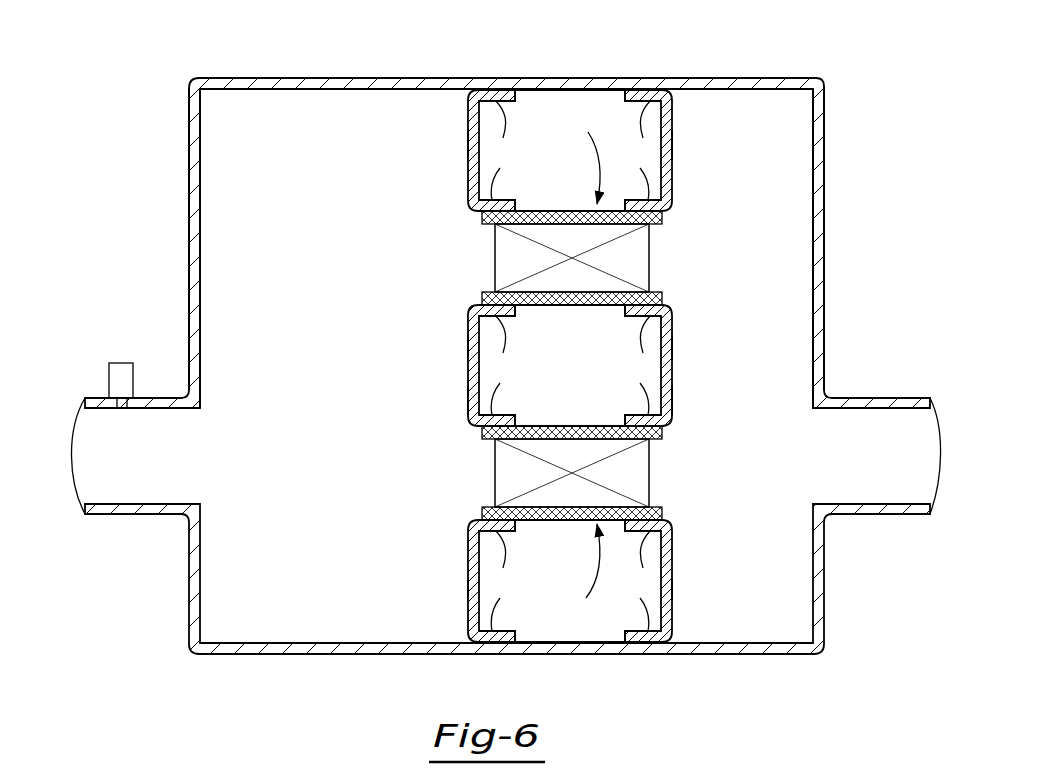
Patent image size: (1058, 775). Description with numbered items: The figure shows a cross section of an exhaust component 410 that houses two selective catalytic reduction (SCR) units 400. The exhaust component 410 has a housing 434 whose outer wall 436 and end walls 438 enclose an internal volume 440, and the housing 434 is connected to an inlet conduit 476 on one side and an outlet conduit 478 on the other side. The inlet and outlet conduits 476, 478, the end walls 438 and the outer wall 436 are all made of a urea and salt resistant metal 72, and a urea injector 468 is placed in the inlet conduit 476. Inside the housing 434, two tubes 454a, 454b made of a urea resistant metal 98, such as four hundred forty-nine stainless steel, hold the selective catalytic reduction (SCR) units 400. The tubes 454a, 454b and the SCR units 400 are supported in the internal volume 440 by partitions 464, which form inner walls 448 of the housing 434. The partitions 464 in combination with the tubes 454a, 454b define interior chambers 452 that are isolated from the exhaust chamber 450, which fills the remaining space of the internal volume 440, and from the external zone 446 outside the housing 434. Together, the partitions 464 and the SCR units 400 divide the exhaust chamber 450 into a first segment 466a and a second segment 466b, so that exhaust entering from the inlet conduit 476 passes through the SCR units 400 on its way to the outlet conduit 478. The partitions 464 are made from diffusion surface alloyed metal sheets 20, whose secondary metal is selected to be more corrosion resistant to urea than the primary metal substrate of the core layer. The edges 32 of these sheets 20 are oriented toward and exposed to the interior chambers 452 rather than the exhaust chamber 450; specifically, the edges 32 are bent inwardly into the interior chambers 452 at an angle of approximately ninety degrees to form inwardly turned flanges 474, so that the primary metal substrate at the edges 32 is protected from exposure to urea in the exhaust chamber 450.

The exhaust component 410 is at (130, 85).
The housing 434 is at (823, 77).
The outer wall 436 is at (360, 76).
The end walls 438 is at (188, 230).
The urea and salt resistant metal 72 is at (195, 125).
The urea injector 468 is at (122, 370).
The exhaust chamber 450 is at (308, 280).
The first segment 466a is at (216, 471).
The second segment 466b is at (831, 471).
The inlet conduit 476 is at (148, 517).
The outlet conduit 478 is at (846, 517).
The internal volume 440 is at (280, 605).
The external zone 446 is at (303, 716).
The diffusion surface alloyed metal sheets 20 is at (476, 160).
The partitions 464 is at (466, 147).
The inner walls 448 is at (466, 400).
The inwardly turned flanges 474 is at (572, 366).
The interior chambers 452 is at (553, 177).
The tube 454a is at (577, 156).
The tube 454b is at (583, 574).
The selective catalytic reduction (SCR) units 400 is at (505, 280).
The urea resistant metal 98 is at (636, 292).
The edges 32 is at (625, 95).